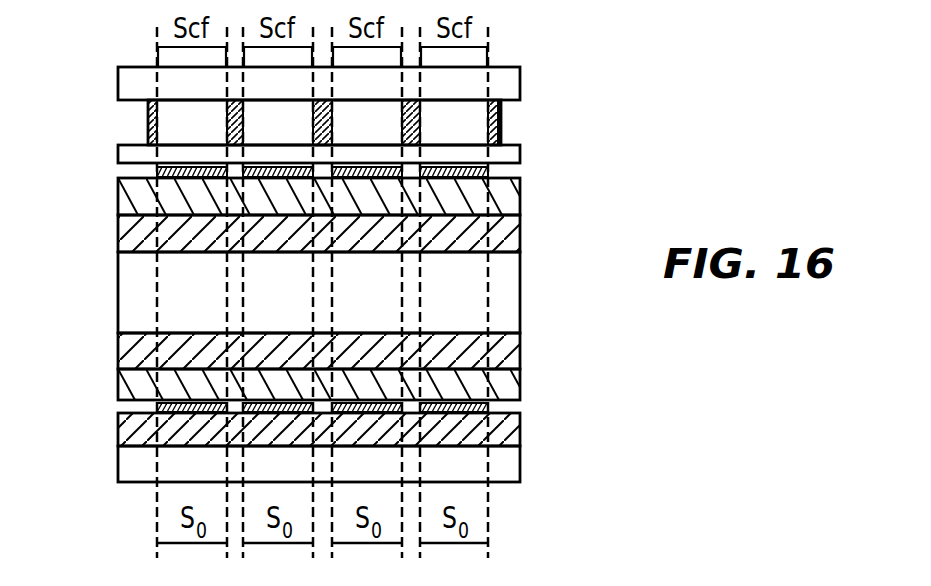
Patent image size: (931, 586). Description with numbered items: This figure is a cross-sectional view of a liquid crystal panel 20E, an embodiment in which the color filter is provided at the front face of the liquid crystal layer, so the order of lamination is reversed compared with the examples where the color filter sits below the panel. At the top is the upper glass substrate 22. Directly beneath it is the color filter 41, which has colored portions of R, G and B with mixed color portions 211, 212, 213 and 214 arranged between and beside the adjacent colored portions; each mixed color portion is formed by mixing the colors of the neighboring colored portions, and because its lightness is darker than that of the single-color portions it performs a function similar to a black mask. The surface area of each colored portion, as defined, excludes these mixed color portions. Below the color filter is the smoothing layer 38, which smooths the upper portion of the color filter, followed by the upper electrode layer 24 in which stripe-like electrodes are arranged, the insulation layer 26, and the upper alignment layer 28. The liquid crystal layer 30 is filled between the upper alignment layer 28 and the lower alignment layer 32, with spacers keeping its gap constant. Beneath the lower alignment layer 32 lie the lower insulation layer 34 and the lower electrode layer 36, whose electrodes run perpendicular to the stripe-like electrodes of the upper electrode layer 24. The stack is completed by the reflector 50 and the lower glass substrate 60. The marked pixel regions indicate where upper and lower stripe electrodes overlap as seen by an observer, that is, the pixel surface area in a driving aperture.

The liquid crystal panel 20E is at (543, 92).
The upper glass substrate 22 is at (118, 77).
The color filter 41 is at (501, 118).
The mixed color portion 211 is at (148, 113).
The mixed color portion 212 is at (227, 144).
The mixed color portion 213 is at (420, 144).
The mixed color portion 214 is at (501, 103).
The smoothing layer 38 is at (118, 147).
The upper electrode layer 24 is at (128, 172).
The insulation layer 26 is at (118, 205).
The upper alignment layer 28 is at (150, 252).
The liquid crystal layer 30 is at (510, 292).
The lower alignment layer 32 is at (118, 353).
The lower insulation layer 34 is at (118, 389).
The lower electrode layer 36 is at (118, 409).
The reflector 50 is at (118, 434).
The lower glass substrate 60 is at (118, 465).